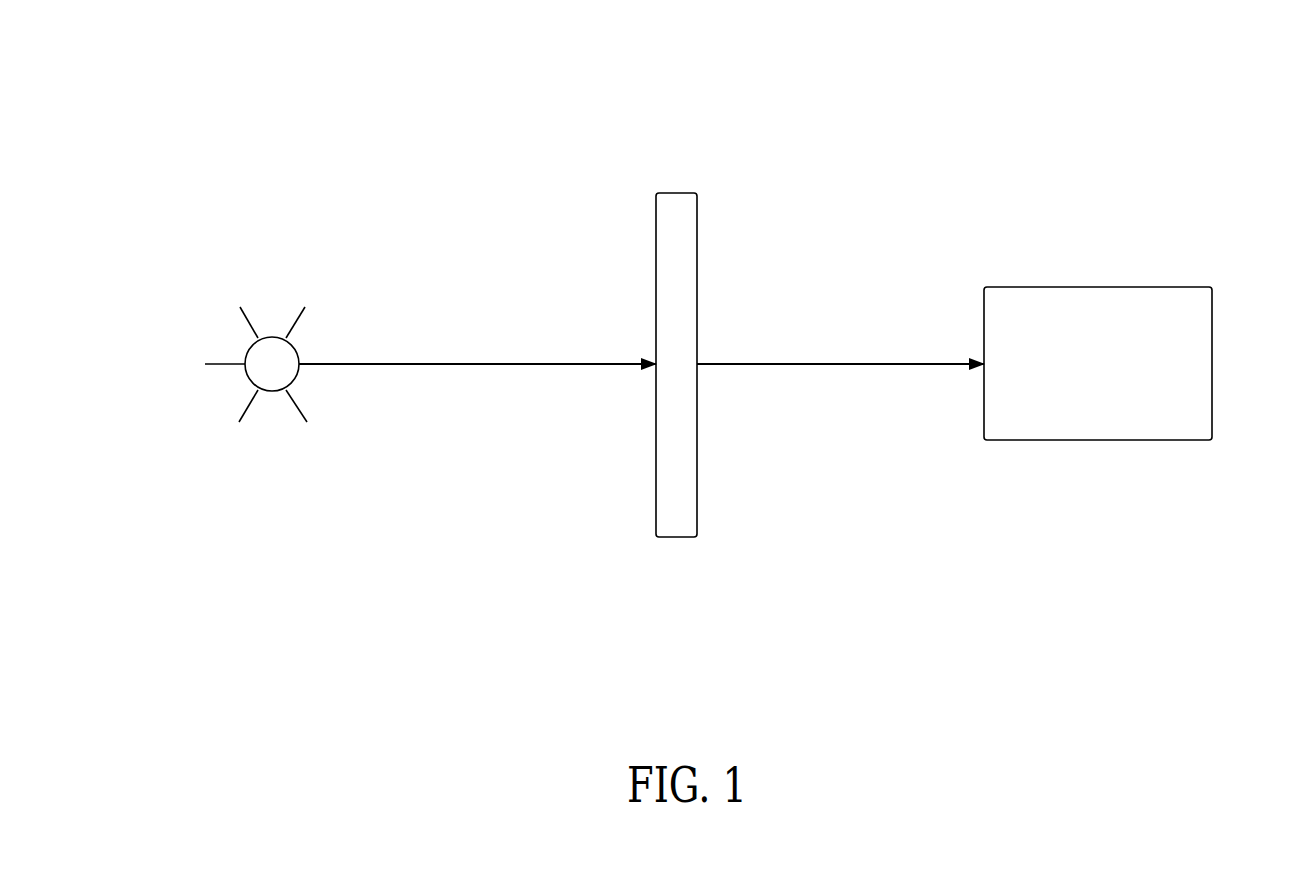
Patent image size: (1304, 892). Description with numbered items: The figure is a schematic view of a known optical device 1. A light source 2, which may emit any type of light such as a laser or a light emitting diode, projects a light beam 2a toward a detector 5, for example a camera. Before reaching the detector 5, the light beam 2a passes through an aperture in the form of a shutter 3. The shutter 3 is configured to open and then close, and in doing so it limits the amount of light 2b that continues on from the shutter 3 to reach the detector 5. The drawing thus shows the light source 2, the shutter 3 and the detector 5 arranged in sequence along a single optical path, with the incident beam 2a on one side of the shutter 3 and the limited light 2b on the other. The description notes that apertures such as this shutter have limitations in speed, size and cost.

The optical device 1 is at (932, 203).
The light source 2 is at (275, 328).
The light beam 2a is at (458, 362).
The light 2b is at (775, 362).
The shutter 3 is at (707, 268).
The detector 5 is at (1172, 278).